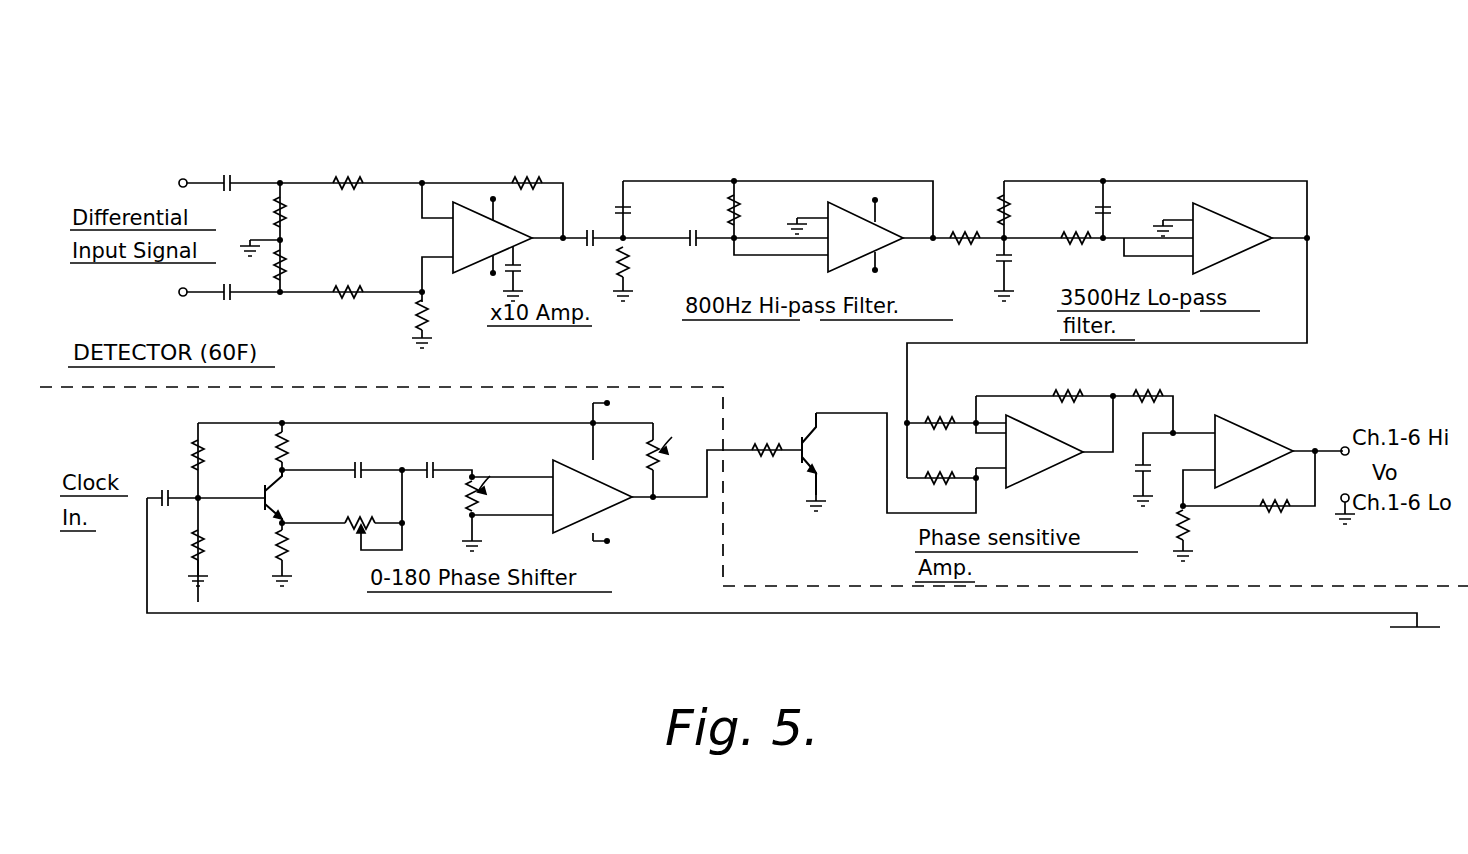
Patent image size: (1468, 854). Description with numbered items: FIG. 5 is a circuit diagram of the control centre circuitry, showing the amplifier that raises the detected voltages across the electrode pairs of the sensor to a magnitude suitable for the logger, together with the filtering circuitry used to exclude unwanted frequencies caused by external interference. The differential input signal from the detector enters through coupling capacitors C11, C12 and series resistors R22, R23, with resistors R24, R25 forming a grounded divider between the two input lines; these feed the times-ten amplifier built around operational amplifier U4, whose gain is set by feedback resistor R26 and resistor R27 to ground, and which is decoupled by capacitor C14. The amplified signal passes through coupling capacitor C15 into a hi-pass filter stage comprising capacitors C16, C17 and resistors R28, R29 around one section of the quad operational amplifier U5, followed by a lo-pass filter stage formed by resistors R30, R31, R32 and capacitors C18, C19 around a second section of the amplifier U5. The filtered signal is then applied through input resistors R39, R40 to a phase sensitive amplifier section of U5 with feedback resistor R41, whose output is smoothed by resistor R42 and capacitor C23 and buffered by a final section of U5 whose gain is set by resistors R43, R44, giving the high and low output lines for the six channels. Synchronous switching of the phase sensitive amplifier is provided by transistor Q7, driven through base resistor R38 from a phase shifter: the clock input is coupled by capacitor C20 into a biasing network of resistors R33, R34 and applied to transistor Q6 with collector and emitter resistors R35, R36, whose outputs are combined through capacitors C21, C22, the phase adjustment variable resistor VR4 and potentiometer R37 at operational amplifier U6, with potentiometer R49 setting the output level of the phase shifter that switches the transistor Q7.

The input coupling capacitor C11 is at (233, 170).
The input coupling capacitor C12 is at (233, 309).
The input resistor R22 is at (345, 171).
The input resistor R23 is at (345, 306).
The bias resistor R24 is at (302, 215).
The bias resistor R25 is at (302, 265).
The feedback resistor R26 is at (528, 171).
The resistor to ground R27 is at (442, 324).
The x10 amplifier operational amplifier U4 is at (498, 236).
The decoupling capacitor C14 is at (537, 272).
The coupling capacitor C15 is at (590, 226).
The hi-pass filter capacitor C16 is at (644, 211).
The hi-pass filter capacitor C17 is at (700, 253).
The hi-pass filter resistor R28 is at (643, 274).
The hi-pass filter resistor R29 is at (756, 210).
The quad operational amplifier U5 is at (1074, 329).
The lo-pass filter resistor R30 is at (965, 226).
The lo-pass filter resistor R31 is at (1026, 205).
The lo-pass filter resistor R32 is at (1080, 252).
The lo-pass filter capacitor C18 is at (1024, 269).
The lo-pass filter capacitor C19 is at (1124, 199).
The phase sensitive amplifier input resistor R39 is at (935, 411).
The phase sensitive amplifier input resistor R40 is at (935, 466).
The phase sensitive amplifier feedback resistor R41 is at (1068, 384).
The output filter resistor R42 is at (1147, 384).
The output filter capacitor C23 is at (1127, 469).
The output amplifier gain resistor R43 is at (1204, 535).
The output amplifier feedback resistor R44 is at (1278, 518).
The transistor base resistor R38 is at (762, 438).
The switching transistor Q7 is at (826, 462).
The clock input coupling capacitor C20 is at (168, 486).
The clock input bias resistor R33 is at (220, 451).
The clock input bias resistor R34 is at (218, 558).
The transistor collector resistor R35 is at (304, 446).
The transistor emitter resistor R36 is at (302, 554).
The phase splitter transistor Q6 is at (287, 496).
The phase shifter capacitor C21 is at (360, 457).
The phase shifter capacitor C22 is at (433, 457).
The phase adjustment variable resistor VR4 is at (389, 516).
The phase shifter potentiometer R37 is at (492, 474).
The phase shifter operational amplifier U6 is at (595, 474).
The output level potentiometer R49 is at (676, 454).